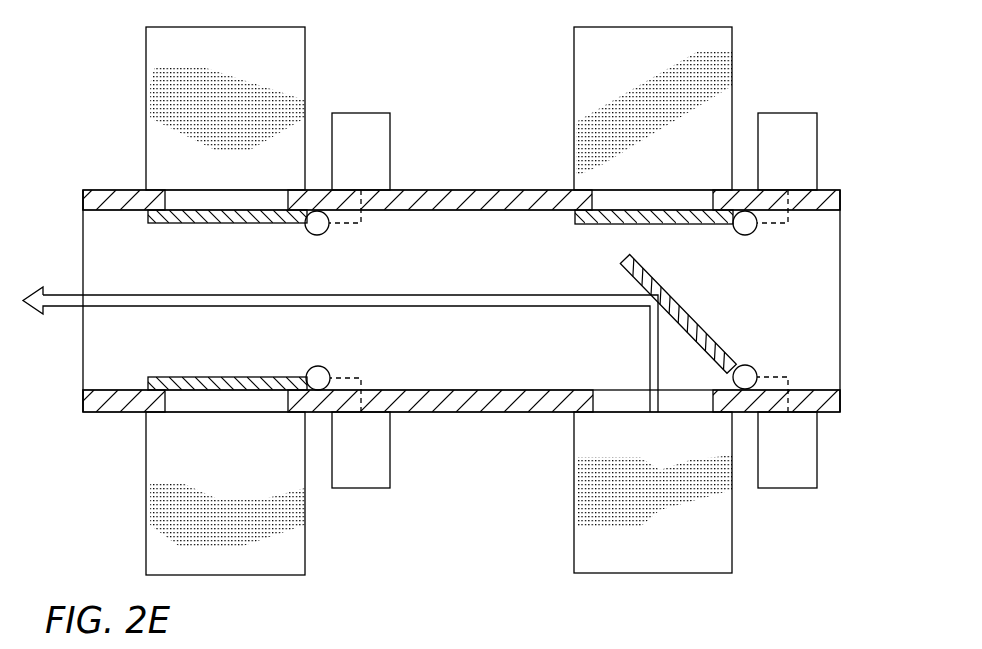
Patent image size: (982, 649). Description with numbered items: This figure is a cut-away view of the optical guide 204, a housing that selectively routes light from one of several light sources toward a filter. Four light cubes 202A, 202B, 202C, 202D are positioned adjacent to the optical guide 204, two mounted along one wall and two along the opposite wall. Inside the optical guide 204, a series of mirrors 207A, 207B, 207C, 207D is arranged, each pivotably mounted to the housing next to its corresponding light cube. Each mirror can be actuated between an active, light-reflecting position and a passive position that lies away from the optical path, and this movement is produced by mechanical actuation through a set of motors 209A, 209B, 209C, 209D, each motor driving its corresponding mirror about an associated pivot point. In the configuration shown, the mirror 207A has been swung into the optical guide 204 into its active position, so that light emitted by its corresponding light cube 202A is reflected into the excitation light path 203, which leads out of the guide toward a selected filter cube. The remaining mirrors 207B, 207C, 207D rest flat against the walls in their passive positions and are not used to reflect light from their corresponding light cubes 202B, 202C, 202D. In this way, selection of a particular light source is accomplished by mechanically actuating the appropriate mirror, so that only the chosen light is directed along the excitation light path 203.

The light cube 202A is at (580, 472).
The light cube 202B is at (583, 127).
The light cube 202C is at (155, 127).
The light cube 202D is at (155, 473).
The excitation light path 203 is at (420, 295).
The optical guide 204 is at (475, 190).
The mirror 207A is at (708, 330).
The mirror 207B is at (625, 227).
The mirror 207C is at (197, 225).
The mirror 207D is at (198, 374).
The motor 209A is at (787, 488).
The motor 209B is at (788, 112).
The motor 209C is at (362, 113).
The motor 209D is at (360, 488).